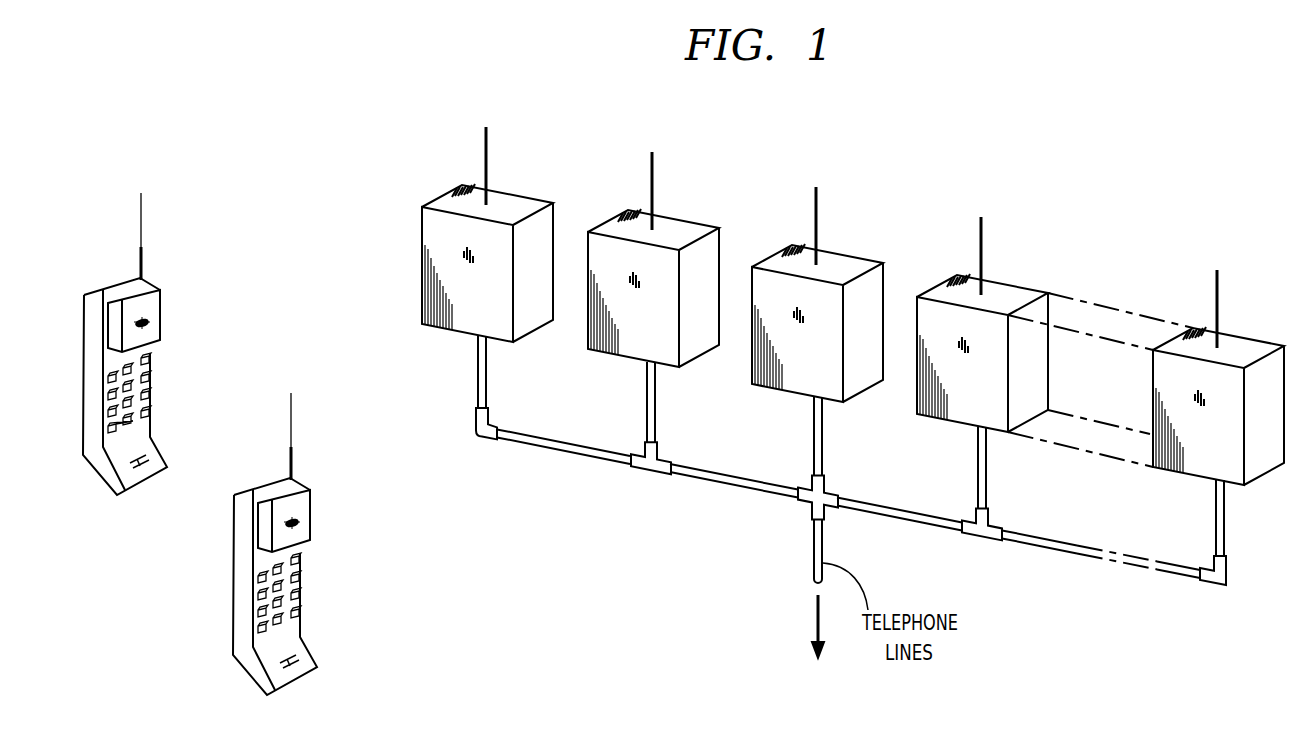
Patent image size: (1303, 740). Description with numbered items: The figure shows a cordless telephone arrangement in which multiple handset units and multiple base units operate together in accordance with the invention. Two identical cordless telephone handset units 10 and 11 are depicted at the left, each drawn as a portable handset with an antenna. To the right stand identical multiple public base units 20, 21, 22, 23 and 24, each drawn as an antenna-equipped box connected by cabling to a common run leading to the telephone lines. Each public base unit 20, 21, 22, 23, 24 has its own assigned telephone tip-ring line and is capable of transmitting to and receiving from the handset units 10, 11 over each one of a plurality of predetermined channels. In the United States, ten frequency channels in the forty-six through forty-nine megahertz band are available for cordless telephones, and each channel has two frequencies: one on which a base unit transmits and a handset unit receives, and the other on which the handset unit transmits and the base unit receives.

The cordless telephone handset unit 10 is at (162, 308).
The cordless telephone handset unit 11 is at (310, 518).
The public base unit 20 is at (502, 190).
The public base unit 21 is at (678, 222).
The public base unit 22 is at (850, 258).
The public base unit 23 is at (1006, 290).
The public base unit 24 is at (1246, 338).